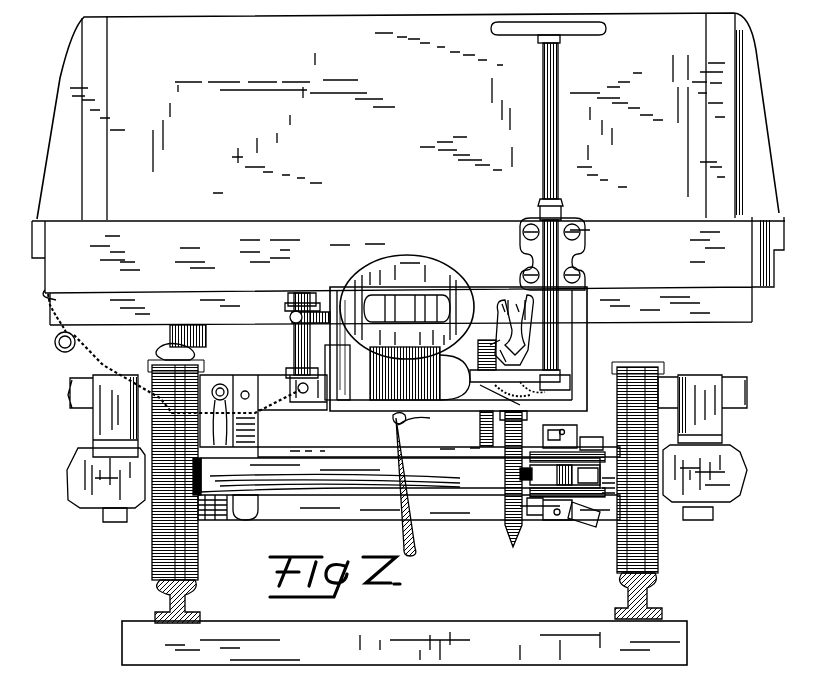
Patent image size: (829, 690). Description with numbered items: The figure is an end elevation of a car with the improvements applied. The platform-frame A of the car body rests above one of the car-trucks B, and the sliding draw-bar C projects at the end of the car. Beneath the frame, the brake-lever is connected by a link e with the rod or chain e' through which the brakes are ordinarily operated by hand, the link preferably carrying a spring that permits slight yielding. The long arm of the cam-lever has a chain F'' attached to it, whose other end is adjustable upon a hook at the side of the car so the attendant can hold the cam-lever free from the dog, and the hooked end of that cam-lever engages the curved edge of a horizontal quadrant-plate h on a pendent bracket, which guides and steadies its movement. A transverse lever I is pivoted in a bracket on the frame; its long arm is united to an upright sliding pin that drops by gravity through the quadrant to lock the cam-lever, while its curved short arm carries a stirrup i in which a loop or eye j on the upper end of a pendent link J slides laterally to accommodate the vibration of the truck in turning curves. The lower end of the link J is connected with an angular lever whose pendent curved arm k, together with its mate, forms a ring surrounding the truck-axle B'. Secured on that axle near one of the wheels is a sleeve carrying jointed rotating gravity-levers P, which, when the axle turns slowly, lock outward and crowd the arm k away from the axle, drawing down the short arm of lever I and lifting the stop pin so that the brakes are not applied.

The platform-frame of a car A is at (408, 169).
The sliding draw-bar C is at (473, 196).
The bracket arm E' is at (286, 307).
The chain F'' is at (171, 351).
The horizontal quadrant-plate h is at (206, 346).
The transverse lever I is at (318, 340).
The pendent link J is at (514, 330).
The stirrup i is at (504, 301).
The loop or eye j is at (517, 301).
The link e is at (532, 392).
The car-truck B is at (409, 473).
The truck-axle B' is at (396, 476).
The rod or chain e' is at (421, 485).
The pendent curved arm k is at (500, 532).
The compound or jointed rotating gravity-lever P is at (575, 520).